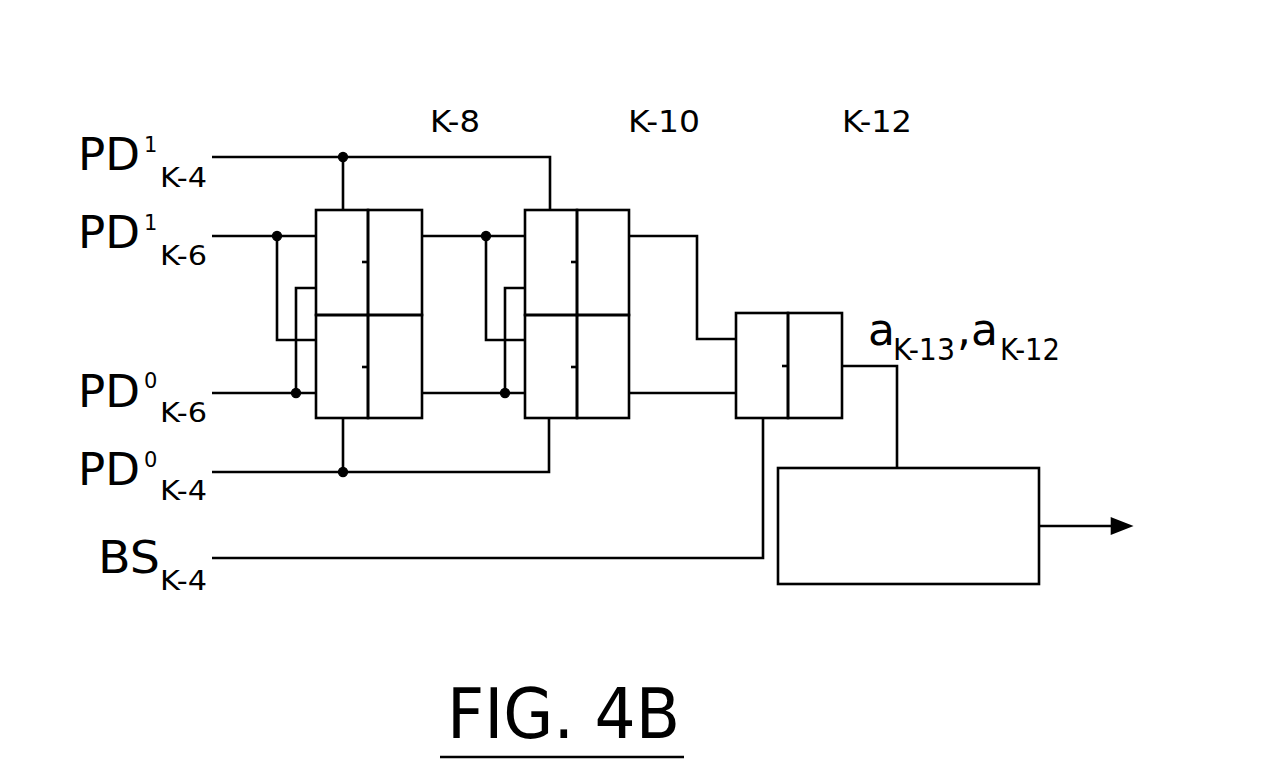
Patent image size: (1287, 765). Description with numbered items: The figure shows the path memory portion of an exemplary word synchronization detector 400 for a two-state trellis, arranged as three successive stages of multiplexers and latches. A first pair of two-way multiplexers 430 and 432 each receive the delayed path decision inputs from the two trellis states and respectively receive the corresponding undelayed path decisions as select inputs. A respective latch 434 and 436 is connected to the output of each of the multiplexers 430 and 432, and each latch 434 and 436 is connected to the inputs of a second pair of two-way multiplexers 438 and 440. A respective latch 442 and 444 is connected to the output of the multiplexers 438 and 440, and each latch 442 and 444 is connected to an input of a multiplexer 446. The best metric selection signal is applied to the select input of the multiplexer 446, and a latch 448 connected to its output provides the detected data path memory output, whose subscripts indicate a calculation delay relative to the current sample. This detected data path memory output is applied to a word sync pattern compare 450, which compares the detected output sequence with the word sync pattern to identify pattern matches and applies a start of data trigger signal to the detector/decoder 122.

The word synchronization detector 400 is at (338, 71).
The two-way multiplexer 430 is at (327, 209).
The two-way multiplexer 432 is at (328, 419).
The latch 434 is at (382, 209).
The latch 436 is at (386, 419).
The two-way multiplexer 438 is at (540, 209).
The two-way multiplexer 440 is at (537, 419).
The latch 442 is at (598, 209).
The latch 444 is at (594, 419).
The multiplexer 446 is at (768, 312).
The latch 448 is at (808, 312).
The word sync pattern compare 450 is at (908, 526).
The detector/decoder 122 is at (1154, 461).